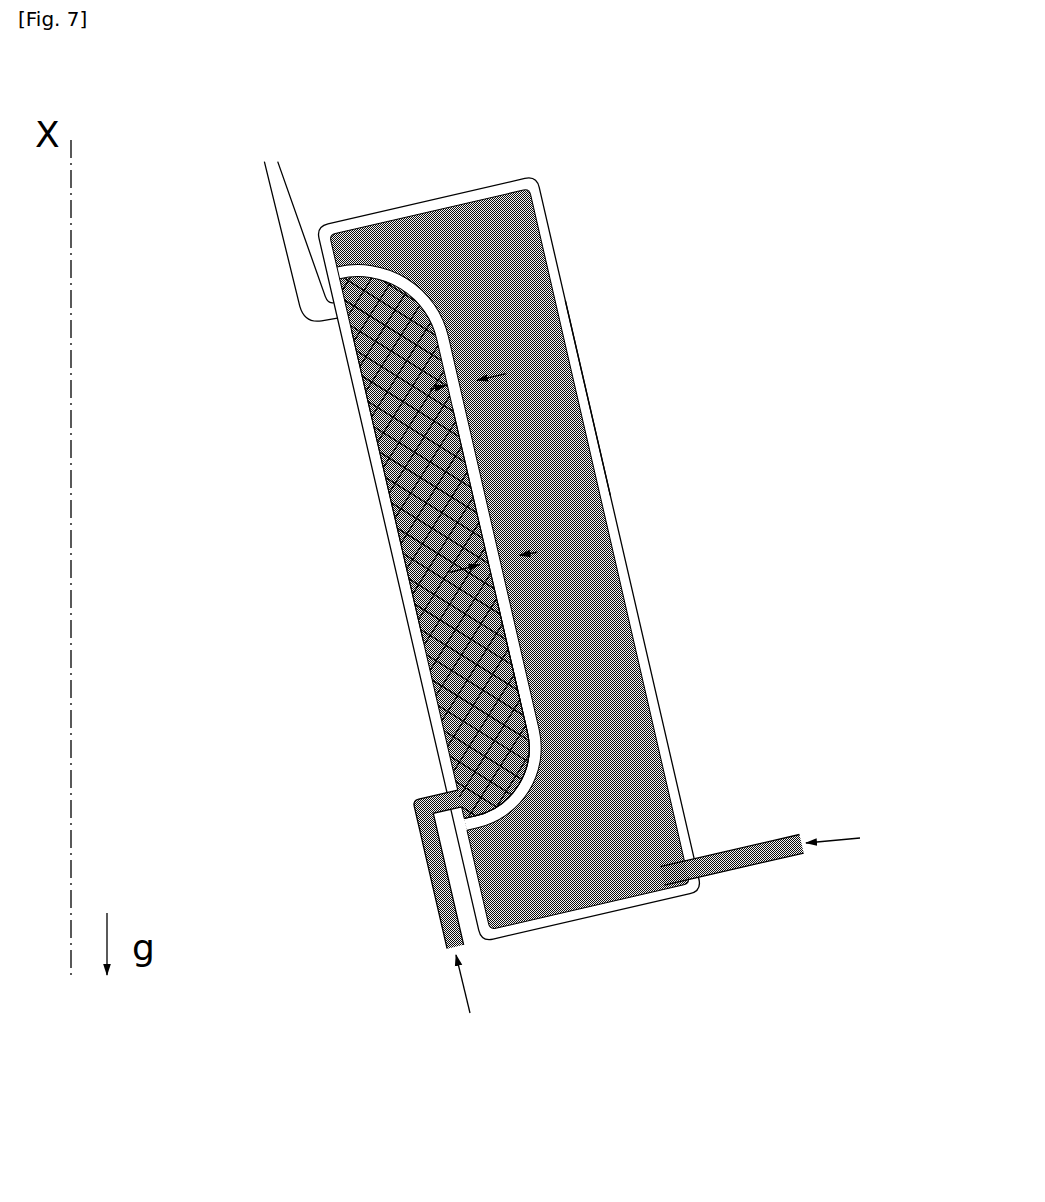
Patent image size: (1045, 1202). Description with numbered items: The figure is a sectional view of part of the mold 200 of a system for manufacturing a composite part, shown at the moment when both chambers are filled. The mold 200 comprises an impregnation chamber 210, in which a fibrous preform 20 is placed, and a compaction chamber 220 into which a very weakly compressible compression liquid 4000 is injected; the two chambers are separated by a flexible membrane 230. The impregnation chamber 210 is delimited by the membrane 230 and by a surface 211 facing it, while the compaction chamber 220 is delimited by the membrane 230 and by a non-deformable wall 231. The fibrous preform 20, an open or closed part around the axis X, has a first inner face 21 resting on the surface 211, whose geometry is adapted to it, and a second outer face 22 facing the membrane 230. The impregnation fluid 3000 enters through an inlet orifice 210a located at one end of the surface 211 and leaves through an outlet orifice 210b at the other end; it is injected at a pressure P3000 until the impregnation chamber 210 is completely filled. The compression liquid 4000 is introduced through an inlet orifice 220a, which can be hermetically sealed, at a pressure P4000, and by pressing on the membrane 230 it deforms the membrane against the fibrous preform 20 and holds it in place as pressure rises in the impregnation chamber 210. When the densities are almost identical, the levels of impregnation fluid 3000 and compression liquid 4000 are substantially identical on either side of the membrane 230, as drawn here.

The mold 200 is at (686, 289).
The compaction chamber 220 is at (517, 243).
The inlet orifice for the compression liquid 220a is at (752, 862).
The wall 231 is at (590, 412).
The flexible membrane 230 is at (413, 292).
The compression liquid 4000 is at (615, 552).
The impregnation fluid 3000 is at (395, 352).
The fibrous preform 20 is at (402, 487).
The first inner face 21 is at (372, 428).
The second outer face 22 is at (432, 552).
The surface 211 is at (428, 650).
The impregnation chamber 210 is at (462, 712).
The inlet orifice of the impregnation fluid 210a is at (443, 896).
The outlet orifice of the impregnation fluid 210b is at (292, 248).
The injection pressure of the impregnation fluid P3000 is at (505, 994).
The injection pressure of the compression liquid P4000 is at (870, 830).